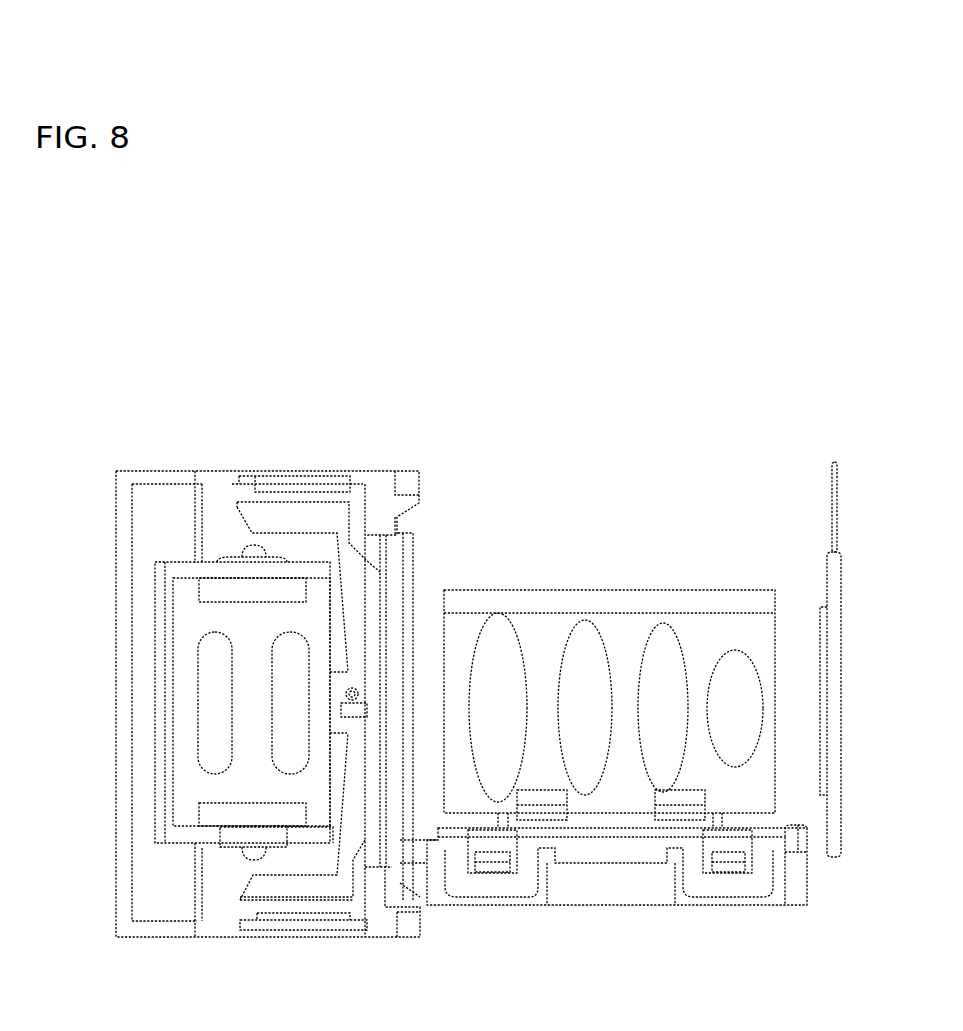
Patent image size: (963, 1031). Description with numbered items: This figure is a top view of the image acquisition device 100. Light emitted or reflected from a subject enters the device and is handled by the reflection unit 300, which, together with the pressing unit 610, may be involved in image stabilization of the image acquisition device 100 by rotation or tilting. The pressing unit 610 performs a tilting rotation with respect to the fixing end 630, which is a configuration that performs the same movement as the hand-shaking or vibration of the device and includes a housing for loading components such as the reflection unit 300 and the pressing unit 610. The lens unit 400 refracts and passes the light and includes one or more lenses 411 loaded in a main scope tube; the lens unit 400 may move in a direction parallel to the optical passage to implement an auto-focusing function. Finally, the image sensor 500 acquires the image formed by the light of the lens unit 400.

The image acquisition device 100 is at (118, 398).
The reflection unit 300 is at (213, 715).
The lens unit 400 is at (677, 570).
The lenses 411 is at (585, 640).
The image sensor 500 is at (830, 702).
The pressing unit 610 is at (288, 903).
The fixing end 630 is at (297, 450).